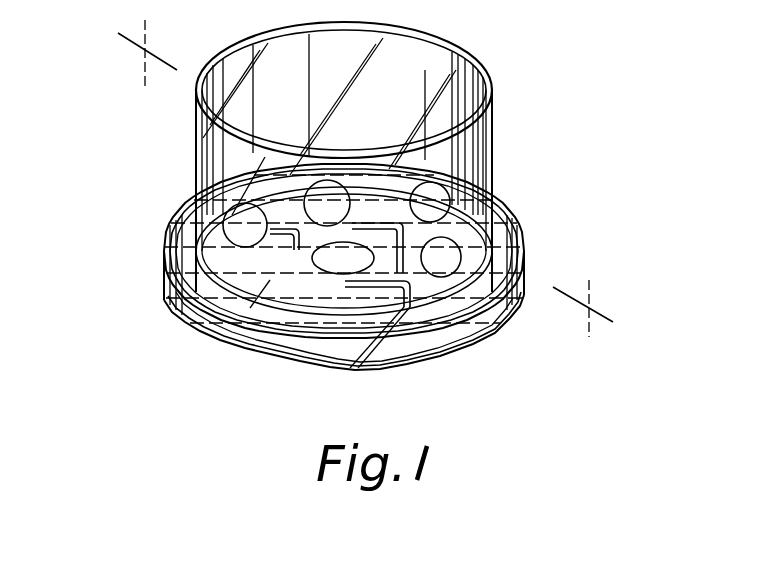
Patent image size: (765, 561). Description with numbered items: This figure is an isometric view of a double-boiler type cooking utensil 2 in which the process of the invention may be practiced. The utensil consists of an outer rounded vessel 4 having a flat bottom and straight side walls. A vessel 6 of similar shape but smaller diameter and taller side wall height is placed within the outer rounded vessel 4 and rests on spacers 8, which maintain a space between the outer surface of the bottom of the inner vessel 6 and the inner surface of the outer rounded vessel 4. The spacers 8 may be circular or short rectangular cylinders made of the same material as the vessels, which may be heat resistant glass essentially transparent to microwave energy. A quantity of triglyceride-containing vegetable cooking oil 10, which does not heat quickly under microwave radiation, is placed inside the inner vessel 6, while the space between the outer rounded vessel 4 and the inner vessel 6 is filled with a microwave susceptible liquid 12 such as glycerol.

The utensil 2 is at (143, 48).
The outer rounded vessel 4 is at (525, 245).
The vessel 6 is at (493, 88).
The spacers 8 is at (312, 182).
The triglyceride-containing vegetable cooking oil 10 is at (275, 310).
The microwave susceptible liquid 12 is at (176, 208).